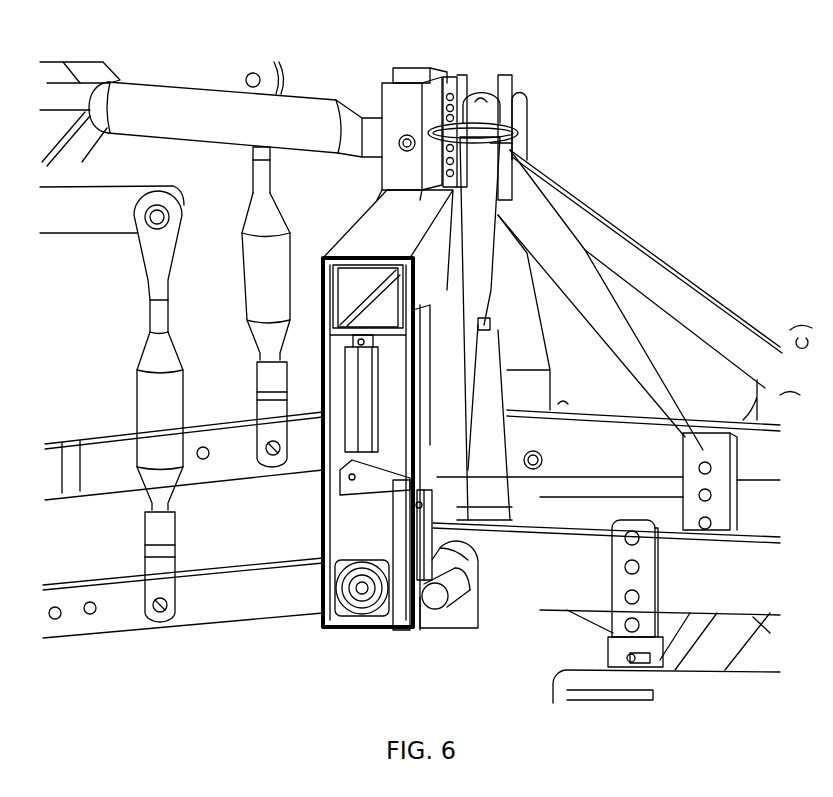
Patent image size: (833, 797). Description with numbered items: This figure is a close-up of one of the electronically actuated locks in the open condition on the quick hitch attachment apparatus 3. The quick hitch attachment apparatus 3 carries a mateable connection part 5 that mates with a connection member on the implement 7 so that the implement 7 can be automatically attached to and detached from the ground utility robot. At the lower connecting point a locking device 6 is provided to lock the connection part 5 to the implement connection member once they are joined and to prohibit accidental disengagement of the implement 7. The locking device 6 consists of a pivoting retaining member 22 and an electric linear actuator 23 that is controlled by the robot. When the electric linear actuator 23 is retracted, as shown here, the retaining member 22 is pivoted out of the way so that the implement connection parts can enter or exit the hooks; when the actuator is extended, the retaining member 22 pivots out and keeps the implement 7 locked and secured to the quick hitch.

The quick hitch attachment apparatus 3 is at (390, 105).
The mateable connection part 5 is at (467, 627).
The locking device 6 is at (377, 548).
The implement 7 is at (630, 257).
The pivoting retaining member 22 is at (378, 473).
The electric linear actuator 23 is at (350, 405).